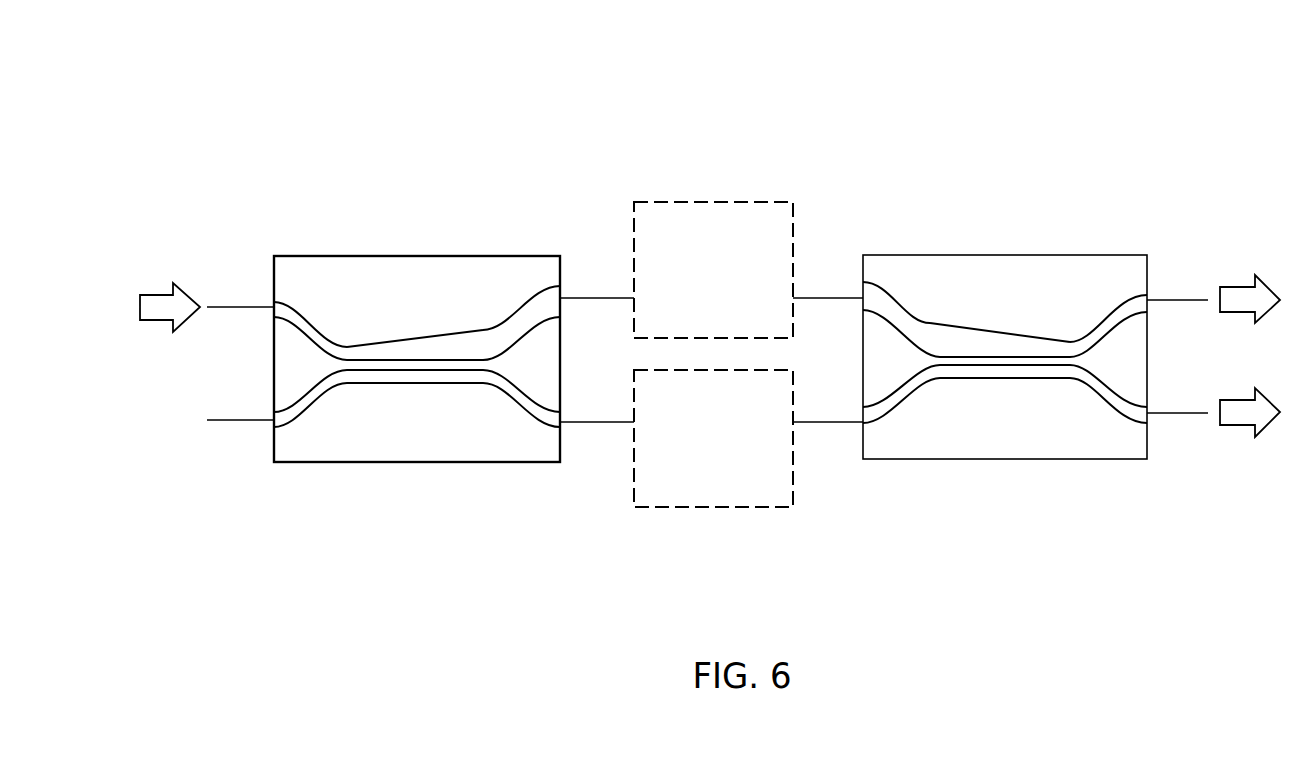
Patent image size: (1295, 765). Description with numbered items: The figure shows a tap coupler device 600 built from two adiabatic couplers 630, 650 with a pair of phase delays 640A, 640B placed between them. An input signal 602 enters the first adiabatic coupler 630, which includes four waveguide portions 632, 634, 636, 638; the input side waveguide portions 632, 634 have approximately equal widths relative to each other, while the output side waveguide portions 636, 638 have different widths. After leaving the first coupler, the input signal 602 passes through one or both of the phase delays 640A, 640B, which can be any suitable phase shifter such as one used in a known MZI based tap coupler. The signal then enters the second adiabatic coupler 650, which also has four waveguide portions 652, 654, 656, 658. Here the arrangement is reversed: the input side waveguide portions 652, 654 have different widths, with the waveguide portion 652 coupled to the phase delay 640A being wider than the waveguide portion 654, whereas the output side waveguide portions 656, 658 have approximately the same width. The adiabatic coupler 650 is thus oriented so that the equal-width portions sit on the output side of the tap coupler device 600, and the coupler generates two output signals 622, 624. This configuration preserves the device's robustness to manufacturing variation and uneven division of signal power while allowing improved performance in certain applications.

The tap coupler device 600 is at (213, 93).
The input signal 602 is at (156, 294).
The adiabatic coupler 630 is at (406, 255).
The input side waveguide portion 632 is at (336, 330).
The input side waveguide portion 634 is at (339, 396).
The output side waveguide portion 636 is at (485, 320).
The output side waveguide portion 638 is at (485, 396).
The phase delay 640A is at (743, 313).
The phase delay 640B is at (743, 480).
The adiabatic coupler 650 is at (1006, 255).
The input side waveguide portion 652 is at (930, 316).
The input side waveguide portion 654 is at (930, 385).
The output side waveguide portion 656 is at (1072, 331).
The output side waveguide portion 658 is at (1073, 384).
The output signal 622 is at (1237, 287).
The output signal 624 is at (1237, 426).